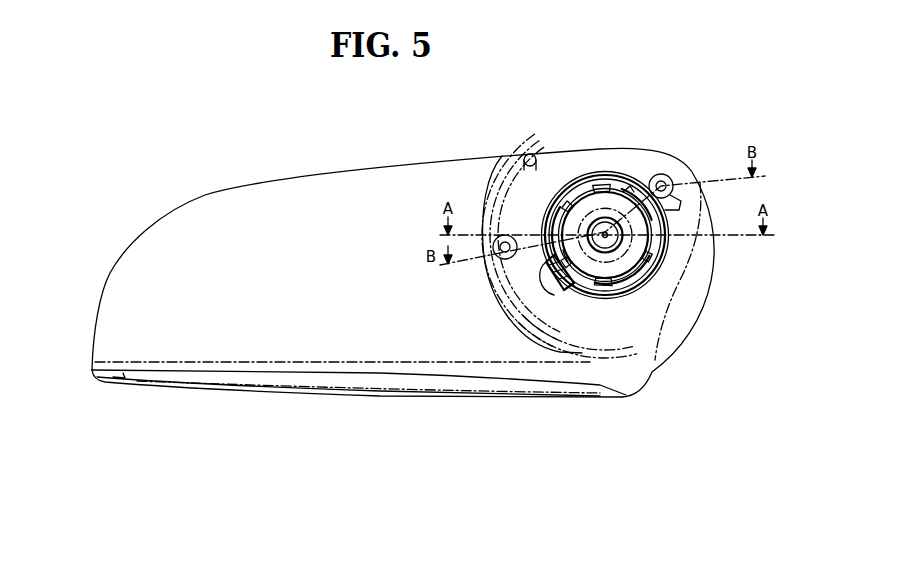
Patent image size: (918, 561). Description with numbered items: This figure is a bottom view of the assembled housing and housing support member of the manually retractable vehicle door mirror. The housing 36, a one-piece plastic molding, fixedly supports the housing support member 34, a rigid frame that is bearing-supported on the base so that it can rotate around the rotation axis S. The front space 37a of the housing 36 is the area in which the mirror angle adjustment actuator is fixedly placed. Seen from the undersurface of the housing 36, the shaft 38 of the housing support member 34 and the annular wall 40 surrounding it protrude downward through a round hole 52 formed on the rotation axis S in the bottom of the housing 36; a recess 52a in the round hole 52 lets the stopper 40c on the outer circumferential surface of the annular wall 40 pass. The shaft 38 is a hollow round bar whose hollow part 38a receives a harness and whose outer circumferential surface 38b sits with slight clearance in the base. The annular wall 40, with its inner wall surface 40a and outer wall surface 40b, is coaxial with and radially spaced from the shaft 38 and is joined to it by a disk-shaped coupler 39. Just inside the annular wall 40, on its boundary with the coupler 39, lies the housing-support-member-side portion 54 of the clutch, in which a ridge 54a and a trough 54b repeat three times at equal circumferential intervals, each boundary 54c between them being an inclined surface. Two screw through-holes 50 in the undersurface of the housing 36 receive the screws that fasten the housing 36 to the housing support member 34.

The housing support member 34 is at (620, 202).
The housing 36 is at (320, 196).
The front space 37a is at (298, 378).
The shaft 38 is at (592, 262).
The hollow part of the shaft 38a is at (563, 222).
The outer circumferential surface of the shaft 38b is at (538, 236).
The disk-shaped coupler 39 is at (588, 222).
The rotation axis S is at (605, 233).
The annular wall 40 is at (655, 238).
The inner wall surface of the annular wall 40a is at (632, 262).
The outer wall surface of the annular wall 40b is at (643, 263).
The stopper 40c is at (557, 287).
The screw through-holes 50 is at (500, 236).
The round hole 52 is at (590, 262).
The recess 52a is at (540, 258).
The housing-support-member-side portion of the clutch 54 is at (622, 272).
The ridge 54a is at (624, 193).
The trough 54b is at (593, 192).
The boundary 54c is at (569, 208).